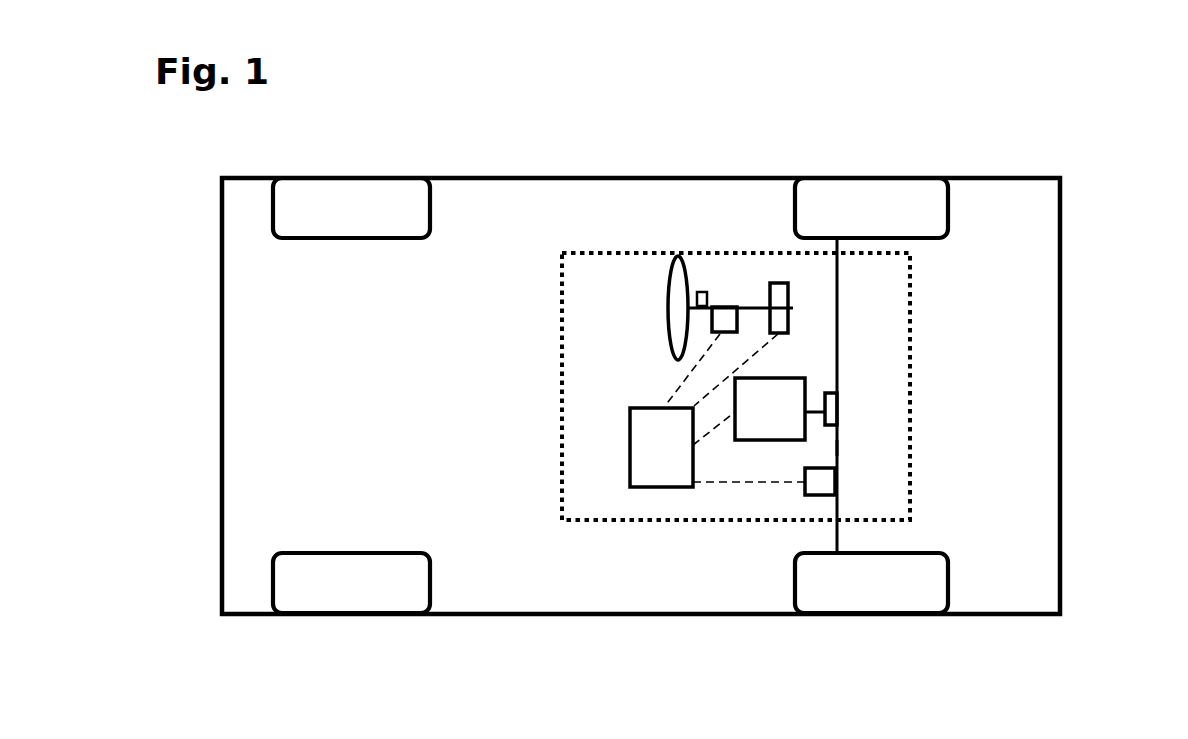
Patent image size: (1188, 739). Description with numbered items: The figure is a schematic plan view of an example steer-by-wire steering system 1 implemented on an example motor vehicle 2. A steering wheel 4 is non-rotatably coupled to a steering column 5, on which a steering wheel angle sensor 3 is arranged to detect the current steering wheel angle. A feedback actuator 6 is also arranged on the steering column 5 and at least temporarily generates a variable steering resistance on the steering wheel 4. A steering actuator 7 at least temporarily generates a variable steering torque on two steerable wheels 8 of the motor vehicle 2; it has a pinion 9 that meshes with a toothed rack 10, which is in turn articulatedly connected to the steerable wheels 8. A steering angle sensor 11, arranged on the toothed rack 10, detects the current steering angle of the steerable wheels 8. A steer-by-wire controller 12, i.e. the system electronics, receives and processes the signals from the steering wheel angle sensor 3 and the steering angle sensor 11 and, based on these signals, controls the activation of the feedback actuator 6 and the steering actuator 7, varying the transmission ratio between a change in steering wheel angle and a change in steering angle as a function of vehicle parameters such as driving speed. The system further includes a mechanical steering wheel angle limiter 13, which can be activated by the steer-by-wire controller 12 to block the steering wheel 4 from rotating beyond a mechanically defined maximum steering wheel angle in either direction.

The steer-by-wire steering system 1 is at (602, 522).
The motor vehicle 2 is at (1092, 377).
The steering wheel angle sensor 3 is at (724, 320).
The steering wheel 4 is at (679, 277).
The steering column 5 is at (750, 307).
The feedback actuator 6 is at (788, 295).
The steering actuator 7 is at (770, 448).
The steerable wheels 8 is at (908, 208).
The pinion 9 is at (837, 412).
The toothed rack 10 is at (837, 448).
The steering angle sensor 11 is at (835, 483).
The steer-by-wire controller 12 is at (662, 462).
The mechanical steering wheel angle limiter 13 is at (701, 292).